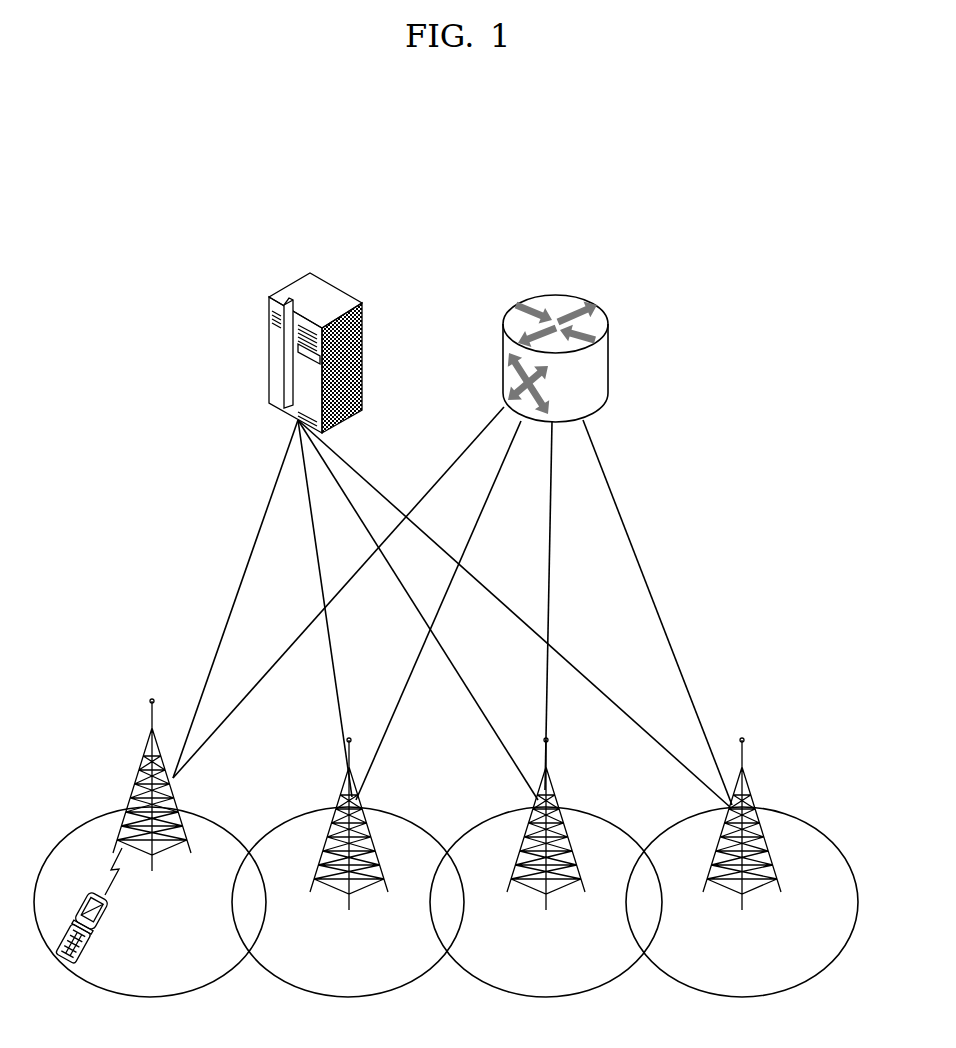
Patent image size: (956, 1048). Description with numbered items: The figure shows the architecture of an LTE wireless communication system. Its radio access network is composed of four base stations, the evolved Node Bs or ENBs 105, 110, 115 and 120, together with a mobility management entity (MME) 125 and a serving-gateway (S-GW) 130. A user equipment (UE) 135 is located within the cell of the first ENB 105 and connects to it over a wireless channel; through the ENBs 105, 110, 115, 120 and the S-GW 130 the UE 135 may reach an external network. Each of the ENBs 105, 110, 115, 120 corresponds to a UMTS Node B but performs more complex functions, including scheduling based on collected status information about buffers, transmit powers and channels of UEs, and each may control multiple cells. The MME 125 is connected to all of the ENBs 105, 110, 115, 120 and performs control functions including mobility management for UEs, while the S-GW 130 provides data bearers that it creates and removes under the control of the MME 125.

The base station (evolved Node B, ENB) 105 is at (138, 762).
The base station (evolved Node B, ENB) 110 is at (342, 788).
The base station (evolved Node B, ENB) 115 is at (552, 788).
The base station (evolved Node B, ENB) 120 is at (750, 783).
The mobility management entity (MME) 125 is at (300, 293).
The serving-gateway (S-GW) 130 is at (552, 300).
The user equipment (UE or terminal) 135 is at (104, 927).